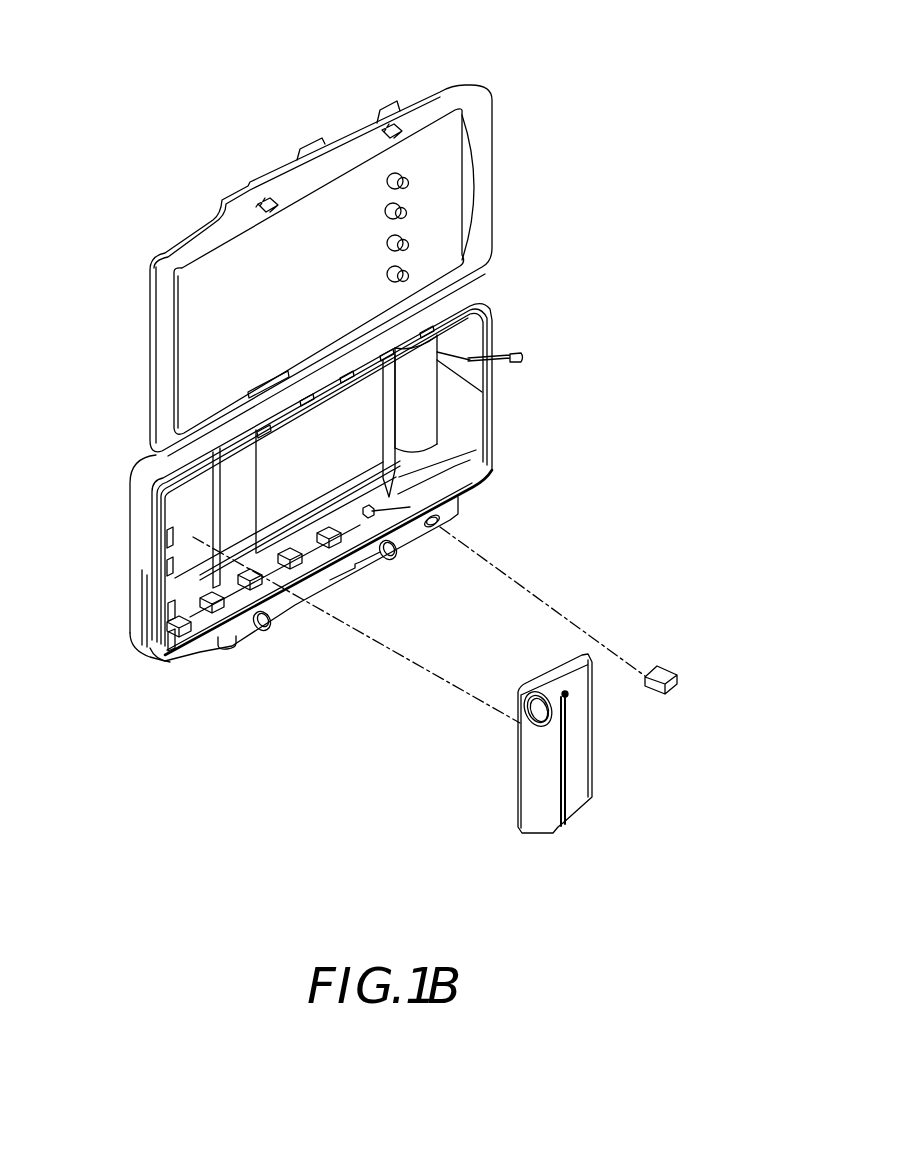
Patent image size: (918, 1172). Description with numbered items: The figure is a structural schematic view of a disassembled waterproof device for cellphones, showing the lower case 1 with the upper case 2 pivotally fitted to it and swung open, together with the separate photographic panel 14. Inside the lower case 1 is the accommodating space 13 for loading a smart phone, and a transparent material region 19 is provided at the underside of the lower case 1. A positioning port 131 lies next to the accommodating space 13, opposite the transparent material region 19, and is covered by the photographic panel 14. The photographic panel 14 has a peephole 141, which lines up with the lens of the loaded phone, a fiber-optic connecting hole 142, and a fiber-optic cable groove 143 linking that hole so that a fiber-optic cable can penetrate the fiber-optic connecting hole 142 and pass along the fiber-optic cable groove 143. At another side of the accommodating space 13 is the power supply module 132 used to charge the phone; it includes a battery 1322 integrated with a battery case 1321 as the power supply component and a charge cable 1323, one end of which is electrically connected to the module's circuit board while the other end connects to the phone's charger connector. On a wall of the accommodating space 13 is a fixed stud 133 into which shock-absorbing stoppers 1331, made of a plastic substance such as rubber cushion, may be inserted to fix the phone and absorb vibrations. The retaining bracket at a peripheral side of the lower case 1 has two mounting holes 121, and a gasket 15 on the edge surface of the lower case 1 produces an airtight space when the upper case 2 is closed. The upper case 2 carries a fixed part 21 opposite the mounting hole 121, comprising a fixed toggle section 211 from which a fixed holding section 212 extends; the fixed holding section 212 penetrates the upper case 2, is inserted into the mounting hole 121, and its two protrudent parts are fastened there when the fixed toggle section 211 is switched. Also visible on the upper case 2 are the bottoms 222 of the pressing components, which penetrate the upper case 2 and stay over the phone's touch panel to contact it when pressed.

The lower case 1 is at (361, 526).
The upper case 2 is at (493, 221).
The fixed part 21 is at (296, 107).
The fixed toggle section 211 is at (268, 178).
The fixed holding section 212 is at (266, 203).
The bottom of pressing component 222 is at (410, 186).
The accommodating space 13 is at (418, 468).
The positioning port 131 is at (205, 500).
The power supply module 132 is at (526, 398).
The battery case 1321 is at (438, 432).
The battery 1322 is at (423, 417).
The charge cable 1323 is at (513, 352).
The fixed stud 133 is at (445, 527).
The shock-absorbing stopper 1331 is at (660, 667).
The mounting hole 121 is at (268, 630).
The gasket 15 is at (172, 661).
The transparent material region 19 is at (177, 546).
The photographic panel 14 is at (563, 785).
The peephole 141 is at (538, 712).
The fiber-optic connecting hole 142 is at (569, 695).
The fiber-optic cable groove 143 is at (566, 783).